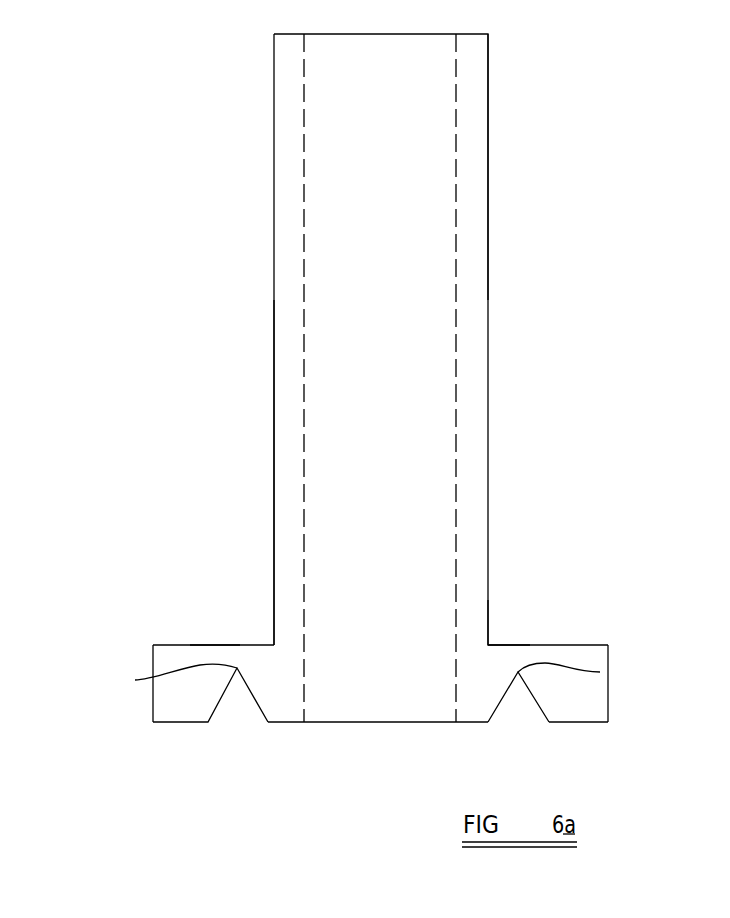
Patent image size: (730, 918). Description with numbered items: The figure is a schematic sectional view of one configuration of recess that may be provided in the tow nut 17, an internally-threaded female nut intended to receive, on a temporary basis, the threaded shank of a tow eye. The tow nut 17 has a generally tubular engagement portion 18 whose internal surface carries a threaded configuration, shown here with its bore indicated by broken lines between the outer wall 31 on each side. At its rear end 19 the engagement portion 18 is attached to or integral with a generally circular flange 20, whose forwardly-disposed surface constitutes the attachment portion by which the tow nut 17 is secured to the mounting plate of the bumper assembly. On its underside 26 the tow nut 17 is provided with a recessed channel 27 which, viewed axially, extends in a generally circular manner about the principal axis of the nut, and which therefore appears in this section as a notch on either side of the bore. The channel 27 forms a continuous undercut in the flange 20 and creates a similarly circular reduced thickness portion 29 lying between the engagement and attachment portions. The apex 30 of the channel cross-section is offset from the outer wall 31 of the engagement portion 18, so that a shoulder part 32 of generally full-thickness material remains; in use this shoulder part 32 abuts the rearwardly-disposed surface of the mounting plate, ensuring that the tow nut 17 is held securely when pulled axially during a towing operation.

The tow nut 17 is at (537, 424).
The engagement portion 18 is at (271, 482).
The rear end 19 is at (505, 625).
The flange 20 is at (163, 645).
The underside 26 is at (363, 722).
The recessed channel 27 is at (243, 718).
The reduced thickness portion 29 is at (207, 641).
The apex 30 is at (135, 680).
The outer wall 31 is at (488, 270).
The shoulder part 32 is at (494, 664).